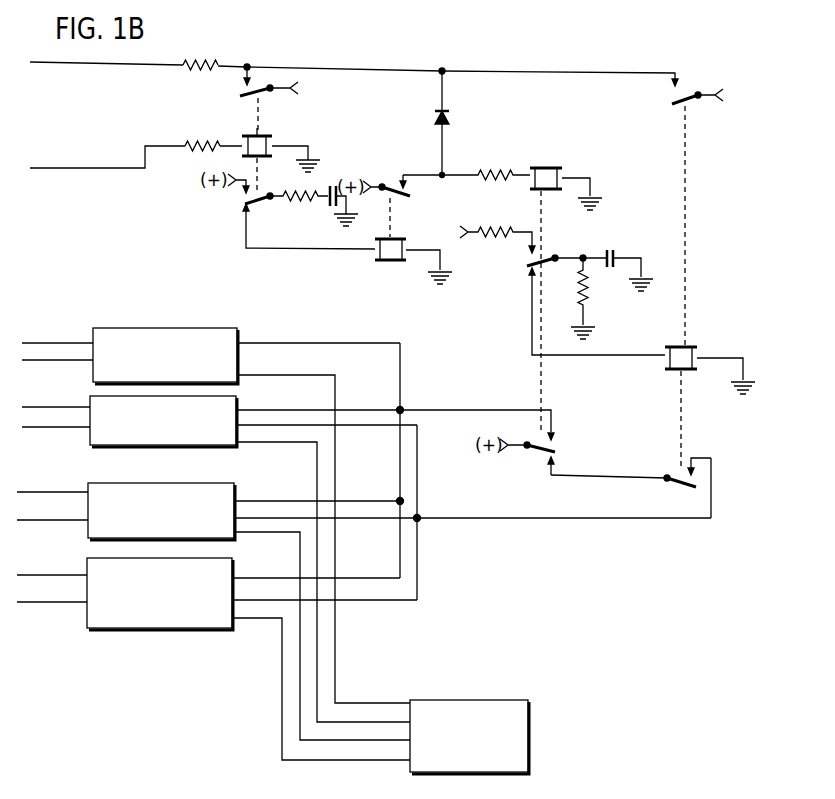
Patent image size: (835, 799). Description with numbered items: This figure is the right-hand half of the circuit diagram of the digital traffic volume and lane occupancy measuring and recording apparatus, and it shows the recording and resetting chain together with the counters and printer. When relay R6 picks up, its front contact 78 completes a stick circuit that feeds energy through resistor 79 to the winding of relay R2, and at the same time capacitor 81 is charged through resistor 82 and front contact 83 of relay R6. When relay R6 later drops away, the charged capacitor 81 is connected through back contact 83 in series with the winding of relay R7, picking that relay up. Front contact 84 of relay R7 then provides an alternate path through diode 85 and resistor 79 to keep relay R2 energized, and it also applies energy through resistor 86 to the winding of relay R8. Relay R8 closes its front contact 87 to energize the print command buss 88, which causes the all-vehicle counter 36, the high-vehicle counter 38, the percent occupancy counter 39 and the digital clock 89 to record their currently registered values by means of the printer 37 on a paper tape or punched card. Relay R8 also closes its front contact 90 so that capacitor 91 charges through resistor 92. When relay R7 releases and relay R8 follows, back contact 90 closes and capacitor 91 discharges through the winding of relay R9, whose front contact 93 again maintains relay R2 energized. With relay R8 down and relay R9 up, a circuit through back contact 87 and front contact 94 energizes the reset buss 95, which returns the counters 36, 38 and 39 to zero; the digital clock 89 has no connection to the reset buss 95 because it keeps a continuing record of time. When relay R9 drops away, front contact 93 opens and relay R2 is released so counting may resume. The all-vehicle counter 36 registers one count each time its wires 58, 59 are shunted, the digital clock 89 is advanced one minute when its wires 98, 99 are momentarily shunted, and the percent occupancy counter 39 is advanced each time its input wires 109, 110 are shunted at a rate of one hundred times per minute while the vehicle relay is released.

The resistor 79 is at (197, 63).
The front contact of relay R6 78 is at (240, 95).
The relay R6 is at (257, 131).
The contact of relay R6 83 is at (240, 206).
The resistor 82 is at (307, 202).
The capacitor 81 is at (338, 182).
The front contact of relay R7 84 is at (396, 176).
The relay R7 is at (413, 245).
The diode 85 is at (448, 119).
The resistor 86 is at (485, 172).
The relay R8 is at (546, 163).
The resistor 92 is at (494, 231).
The contact of relay R8 90 is at (583, 305).
The capacitor 91 is at (614, 257).
The front contact of relay R9 93 is at (672, 103).
The relay R9 is at (710, 354).
The print command buss 88 is at (460, 410).
The contact of relay R8 87 is at (556, 452).
The front contact of relay R9 94 is at (685, 484).
The reset buss 95 is at (503, 520).
The digital clock 89 is at (183, 327).
The wire to digital clock 98 is at (23, 347).
The wire to digital clock 99 is at (35, 361).
The all-vehicle counter 36 is at (204, 447).
The wire to all-vehicle counter 58 is at (25, 408).
The wire to all-vehicle counter 59 is at (30, 430).
The high-vehicle counter 38 is at (115, 478).
The input wire of counter 39 110 is at (27, 574).
The input wire of counter 39 109 is at (52, 616).
The percent occupancy counter 39 is at (215, 630).
The printer 37 is at (489, 699).